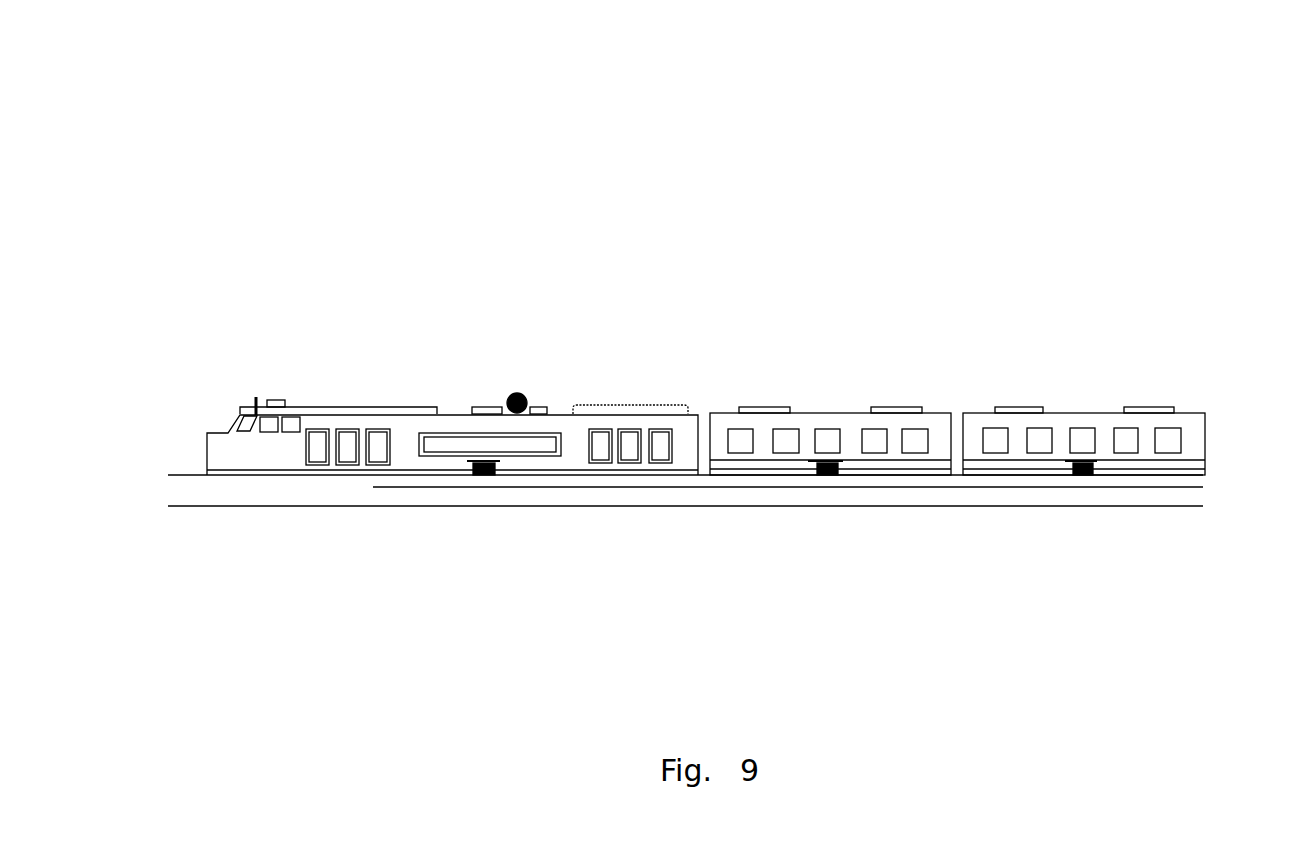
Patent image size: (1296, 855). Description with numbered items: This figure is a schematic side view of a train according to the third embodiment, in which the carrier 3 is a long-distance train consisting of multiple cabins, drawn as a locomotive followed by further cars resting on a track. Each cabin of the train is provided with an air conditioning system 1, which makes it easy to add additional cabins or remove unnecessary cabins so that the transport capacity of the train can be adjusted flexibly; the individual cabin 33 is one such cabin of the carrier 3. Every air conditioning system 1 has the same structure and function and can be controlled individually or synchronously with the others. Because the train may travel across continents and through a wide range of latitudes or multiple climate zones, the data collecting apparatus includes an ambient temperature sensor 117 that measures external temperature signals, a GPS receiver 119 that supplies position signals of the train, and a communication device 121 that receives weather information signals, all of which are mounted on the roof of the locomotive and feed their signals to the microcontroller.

The air conditioning system 1 is at (802, 483).
The carrier 3 is at (690, 136).
The rail car 33 is at (930, 413).
The ambient temperature sensor 117 is at (462, 418).
The GPS receiver 119 is at (517, 392).
The communication device 121 is at (255, 403).